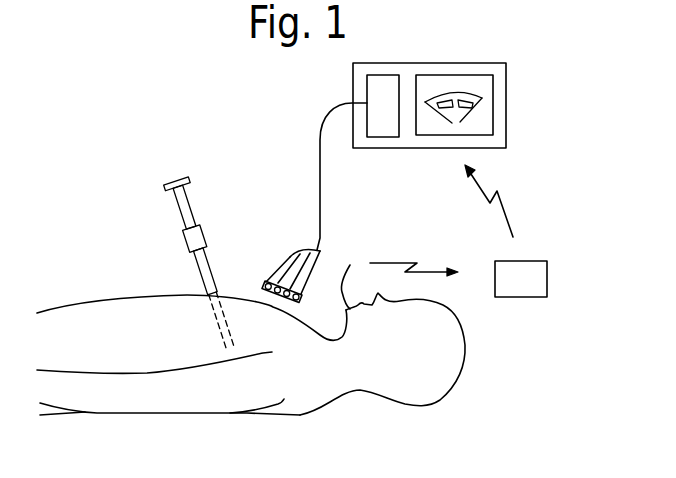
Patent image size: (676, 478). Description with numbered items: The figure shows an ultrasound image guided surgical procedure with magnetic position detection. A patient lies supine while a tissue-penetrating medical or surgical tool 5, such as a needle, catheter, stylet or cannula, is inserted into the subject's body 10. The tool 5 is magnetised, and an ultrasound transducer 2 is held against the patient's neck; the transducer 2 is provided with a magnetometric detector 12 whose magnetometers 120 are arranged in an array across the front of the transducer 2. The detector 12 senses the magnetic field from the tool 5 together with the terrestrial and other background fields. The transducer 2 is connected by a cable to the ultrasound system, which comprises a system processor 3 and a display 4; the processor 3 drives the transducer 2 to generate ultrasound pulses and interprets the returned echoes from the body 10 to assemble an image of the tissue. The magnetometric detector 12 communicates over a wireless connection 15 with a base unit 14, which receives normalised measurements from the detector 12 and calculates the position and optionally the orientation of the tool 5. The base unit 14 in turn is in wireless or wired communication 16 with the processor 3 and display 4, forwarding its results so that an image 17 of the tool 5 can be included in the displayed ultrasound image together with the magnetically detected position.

The ultrasound transducer 2 is at (293, 252).
The system processor 3 is at (376, 117).
The display 4 is at (506, 90).
The tissue-penetrating medical or surgical tool 5 is at (200, 266).
The subject's body 10 is at (137, 347).
The magnetometric detector 12 is at (264, 284).
The base unit 14 is at (508, 290).
The wireless connection 15 is at (393, 262).
The wireless or wired communication 16 is at (500, 207).
The image of the tool 17 is at (452, 105).
The magnetometers 120 is at (302, 294).